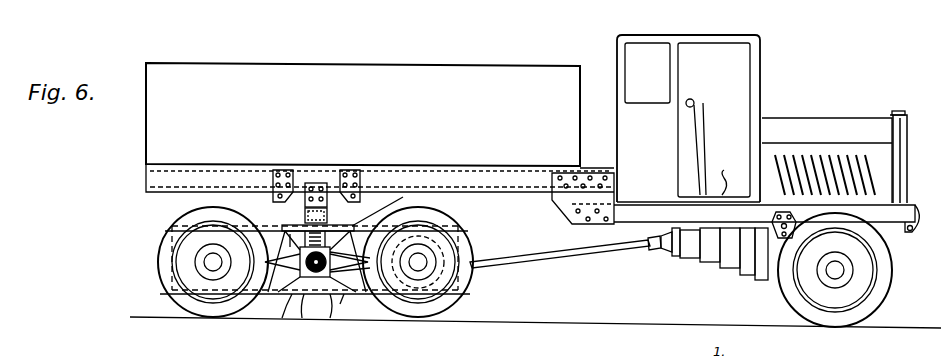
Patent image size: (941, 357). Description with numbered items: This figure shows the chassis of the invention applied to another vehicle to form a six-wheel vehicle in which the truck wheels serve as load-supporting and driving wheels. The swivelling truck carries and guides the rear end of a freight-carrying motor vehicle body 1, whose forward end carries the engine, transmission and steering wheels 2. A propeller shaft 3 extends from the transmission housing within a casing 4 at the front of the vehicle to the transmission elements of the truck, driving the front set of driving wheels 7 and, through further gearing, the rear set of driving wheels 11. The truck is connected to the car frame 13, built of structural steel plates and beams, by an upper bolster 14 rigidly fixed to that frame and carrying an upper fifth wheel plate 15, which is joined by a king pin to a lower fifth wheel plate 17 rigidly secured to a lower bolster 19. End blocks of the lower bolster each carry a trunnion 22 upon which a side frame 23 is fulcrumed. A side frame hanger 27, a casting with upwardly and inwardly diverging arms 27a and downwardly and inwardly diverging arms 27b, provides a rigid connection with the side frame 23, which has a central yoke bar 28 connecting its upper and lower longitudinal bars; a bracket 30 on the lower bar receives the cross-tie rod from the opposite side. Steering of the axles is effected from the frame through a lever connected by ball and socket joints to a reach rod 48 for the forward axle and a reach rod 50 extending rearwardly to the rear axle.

The motor vehicle body 1 is at (363, 114).
The steering wheels 2 is at (882, 287).
The propeller shaft 3 is at (573, 246).
The casing 4 is at (718, 240).
The front set of driving wheels 7 is at (480, 188).
The rear set of driving wheels 11 is at (166, 236).
The car frame 13 is at (317, 188).
The upper bolster 14 is at (304, 212).
The upper fifth wheel plate 15 is at (330, 225).
The lower fifth wheel plate 17 is at (278, 242).
The lower bolster 19 is at (301, 245).
The trunnion 22 is at (350, 264).
The side frame 23 is at (357, 300).
The side frame hanger 27 is at (279, 315).
The diverging arms 27a is at (389, 208).
The diverging arms 27b is at (345, 314).
The central yoke bar 28 is at (372, 270).
The bracket 30 is at (304, 317).
The reach rod 48 is at (393, 242).
The reach rod 50 is at (306, 262).